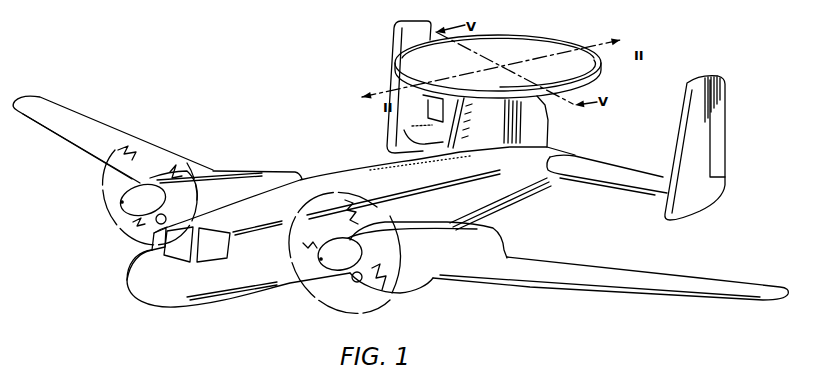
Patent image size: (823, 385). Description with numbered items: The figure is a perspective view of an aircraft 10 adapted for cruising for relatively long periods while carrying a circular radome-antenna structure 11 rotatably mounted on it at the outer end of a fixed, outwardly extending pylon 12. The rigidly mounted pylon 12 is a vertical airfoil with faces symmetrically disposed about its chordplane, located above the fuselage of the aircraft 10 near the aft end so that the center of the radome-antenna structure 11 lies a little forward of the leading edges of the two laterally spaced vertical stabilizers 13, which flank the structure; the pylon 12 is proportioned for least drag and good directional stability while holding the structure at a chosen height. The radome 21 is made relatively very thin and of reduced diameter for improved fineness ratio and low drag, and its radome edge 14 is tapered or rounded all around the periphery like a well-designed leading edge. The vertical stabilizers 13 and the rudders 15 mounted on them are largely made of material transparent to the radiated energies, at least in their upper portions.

The aircraft 10 is at (297, 152).
The radome-antenna structure 11 is at (546, 34).
The pylon 12 is at (548, 132).
The vertical stabilizers 13 is at (684, 90).
The radome edge 14 is at (423, 96).
The rudders 15 is at (726, 142).
The radome 21 is at (545, 80).